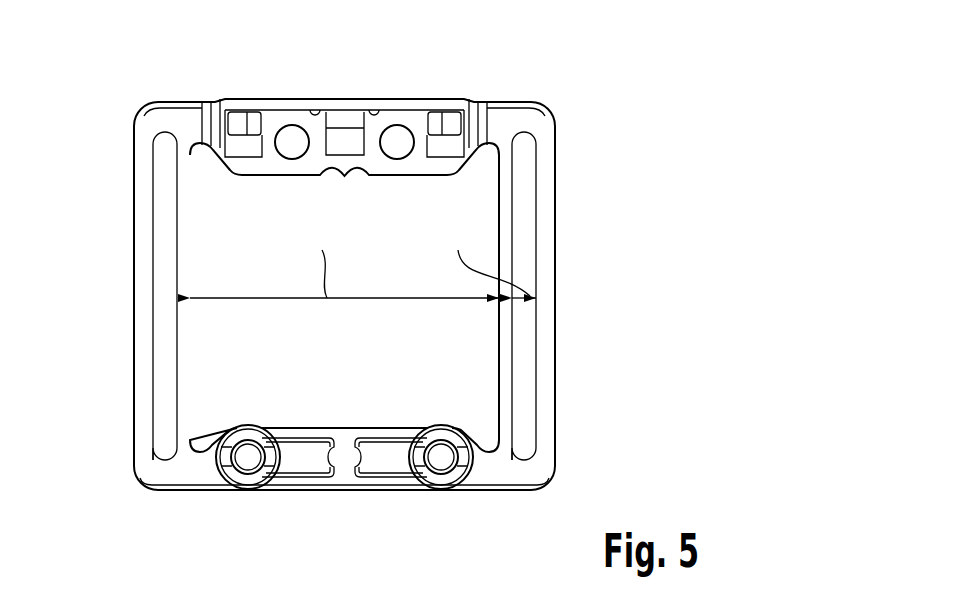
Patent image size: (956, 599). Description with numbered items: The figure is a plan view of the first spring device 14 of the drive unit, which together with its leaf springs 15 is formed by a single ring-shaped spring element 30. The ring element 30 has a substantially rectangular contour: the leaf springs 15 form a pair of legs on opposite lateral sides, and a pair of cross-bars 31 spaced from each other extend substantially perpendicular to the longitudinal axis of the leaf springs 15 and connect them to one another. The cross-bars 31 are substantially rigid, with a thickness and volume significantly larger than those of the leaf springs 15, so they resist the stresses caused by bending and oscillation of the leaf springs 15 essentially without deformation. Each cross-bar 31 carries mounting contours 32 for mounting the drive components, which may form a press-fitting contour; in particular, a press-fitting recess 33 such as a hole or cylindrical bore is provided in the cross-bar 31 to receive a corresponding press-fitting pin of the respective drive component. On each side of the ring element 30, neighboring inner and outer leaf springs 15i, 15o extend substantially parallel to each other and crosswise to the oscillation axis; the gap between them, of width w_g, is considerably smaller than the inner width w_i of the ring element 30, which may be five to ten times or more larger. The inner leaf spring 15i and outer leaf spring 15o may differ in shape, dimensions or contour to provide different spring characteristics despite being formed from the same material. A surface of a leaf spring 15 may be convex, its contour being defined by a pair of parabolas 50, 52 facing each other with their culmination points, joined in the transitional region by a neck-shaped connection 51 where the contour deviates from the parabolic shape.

The ring-shaped spring element 30 is at (545, 98).
The first spring device 14 is at (560, 170).
The leaf springs 15 is at (572, 296).
The outer leaf spring 15o is at (545, 248).
The inner leaf spring 15i is at (503, 347).
The parabola 50 is at (110, 296).
The neck-shaped connection 51 is at (142, 308).
The parabola 52 is at (136, 428).
The cross-bars 31 is at (372, 137).
The mounting contours 32 is at (273, 126).
The press-fitting recess 33 is at (292, 142).